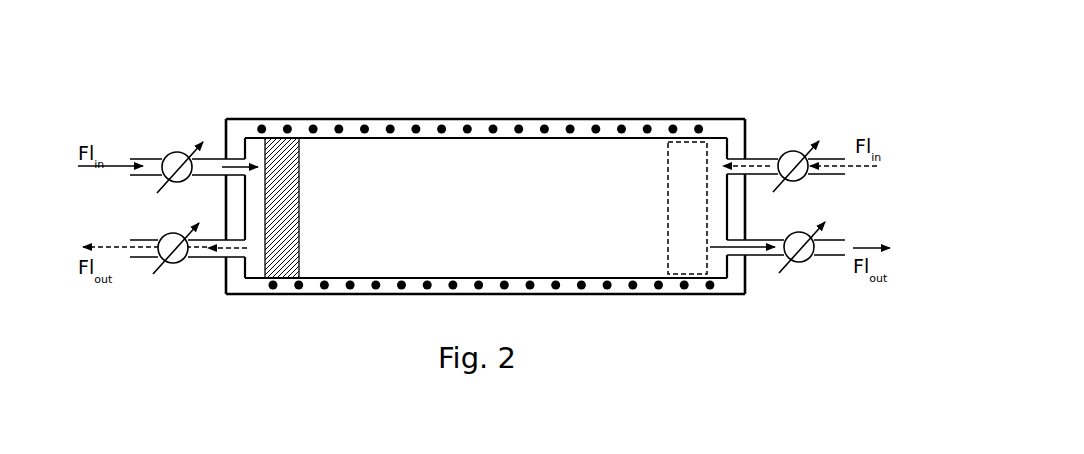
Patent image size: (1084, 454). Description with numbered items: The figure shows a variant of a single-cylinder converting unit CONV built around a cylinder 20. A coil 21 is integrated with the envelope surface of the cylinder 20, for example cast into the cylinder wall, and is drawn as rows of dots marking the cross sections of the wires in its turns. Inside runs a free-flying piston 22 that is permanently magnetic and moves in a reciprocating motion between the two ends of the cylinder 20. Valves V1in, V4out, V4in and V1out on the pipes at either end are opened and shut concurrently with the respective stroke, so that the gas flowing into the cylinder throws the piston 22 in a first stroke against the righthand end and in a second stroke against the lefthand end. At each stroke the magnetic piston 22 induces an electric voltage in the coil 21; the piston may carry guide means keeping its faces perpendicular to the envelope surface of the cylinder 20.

The cylinder 20 is at (481, 119).
The coil 21 is at (647, 128).
The free-flying piston 22 is at (300, 153).
The converting unit CONV is at (700, 62).
The inlet valve V1in is at (177, 152).
The outlet valve V1out is at (182, 264).
The inlet valve V4in is at (792, 151).
The outlet valve V4out is at (803, 263).